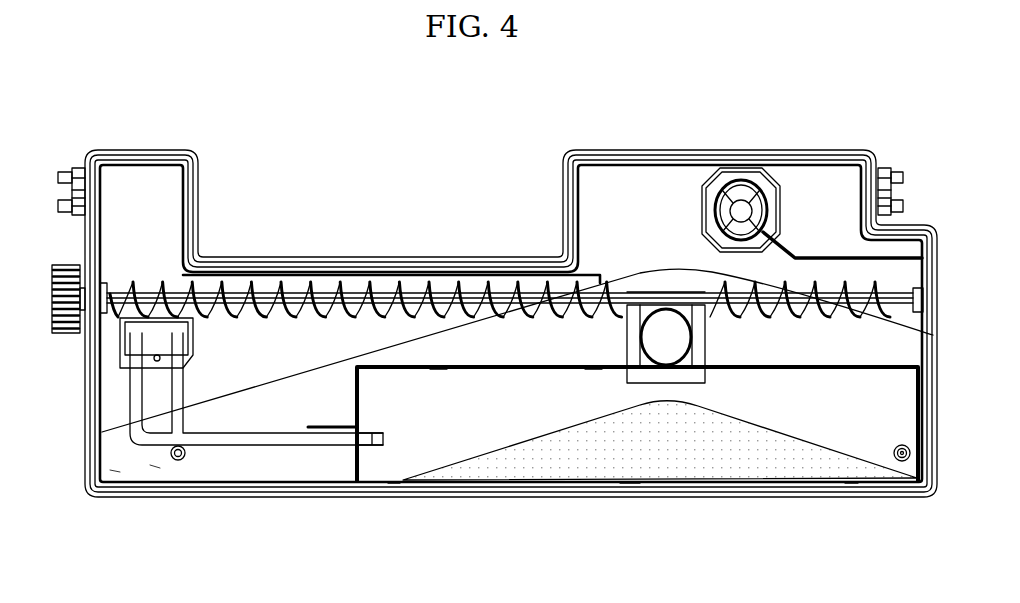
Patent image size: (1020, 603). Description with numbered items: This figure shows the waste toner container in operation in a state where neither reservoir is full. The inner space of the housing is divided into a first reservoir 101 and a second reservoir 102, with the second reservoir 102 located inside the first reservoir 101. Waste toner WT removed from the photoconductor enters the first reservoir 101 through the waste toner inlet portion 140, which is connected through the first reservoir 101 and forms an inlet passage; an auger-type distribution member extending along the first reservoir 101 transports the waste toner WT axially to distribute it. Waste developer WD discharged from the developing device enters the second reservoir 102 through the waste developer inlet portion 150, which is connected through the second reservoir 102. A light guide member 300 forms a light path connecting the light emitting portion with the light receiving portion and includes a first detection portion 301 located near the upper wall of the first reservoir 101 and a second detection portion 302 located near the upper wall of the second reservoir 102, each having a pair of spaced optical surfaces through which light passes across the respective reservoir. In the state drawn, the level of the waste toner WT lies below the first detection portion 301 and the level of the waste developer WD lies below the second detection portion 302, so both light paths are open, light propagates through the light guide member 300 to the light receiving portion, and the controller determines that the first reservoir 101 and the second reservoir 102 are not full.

The first reservoir 101 is at (278, 338).
The second reservoir 102 is at (452, 424).
The waste toner inlet portion 140 is at (742, 207).
The waste developer inlet portion 150 is at (666, 325).
The light guide member 300 is at (241, 450).
The first detection portion 301 is at (120, 341).
The second detection portion 302 is at (390, 443).
The waste toner WT is at (137, 460).
The waste developer WD is at (681, 455).